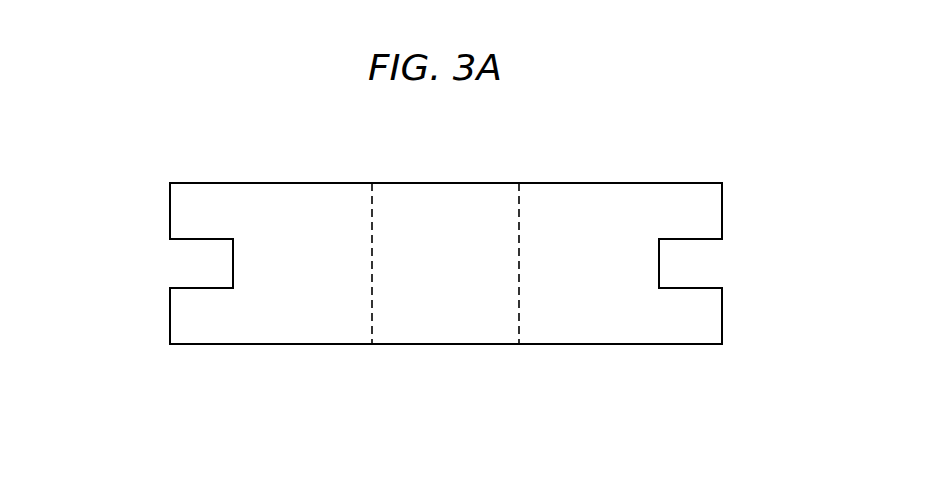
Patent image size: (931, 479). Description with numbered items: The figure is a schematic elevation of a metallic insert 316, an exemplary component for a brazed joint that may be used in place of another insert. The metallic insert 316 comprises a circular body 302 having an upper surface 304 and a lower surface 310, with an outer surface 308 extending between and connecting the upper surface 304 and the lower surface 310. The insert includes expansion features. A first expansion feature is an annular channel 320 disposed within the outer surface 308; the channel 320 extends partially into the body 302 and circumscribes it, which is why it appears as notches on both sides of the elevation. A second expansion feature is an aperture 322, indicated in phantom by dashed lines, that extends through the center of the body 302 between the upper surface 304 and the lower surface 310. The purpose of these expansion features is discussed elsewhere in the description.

The circular body 302 is at (635, 183).
The upper surface 304 is at (263, 183).
The outer surface 308 is at (170, 316).
The lower surface 310 is at (329, 350).
The metallic insert 316 is at (176, 111).
The annular channel 320 is at (703, 259).
The aperture 322 is at (440, 202).